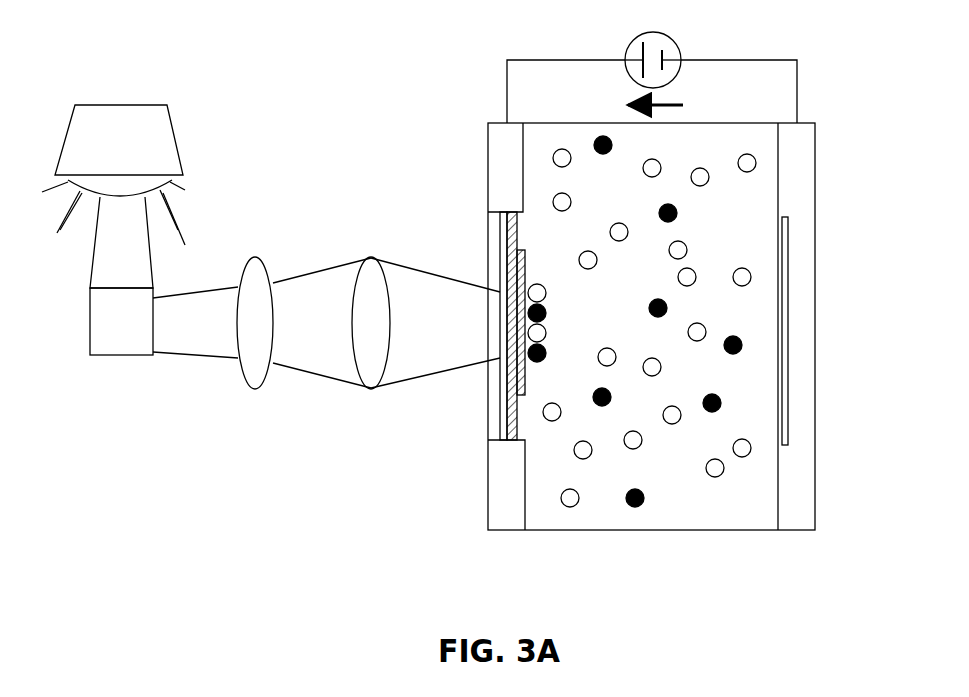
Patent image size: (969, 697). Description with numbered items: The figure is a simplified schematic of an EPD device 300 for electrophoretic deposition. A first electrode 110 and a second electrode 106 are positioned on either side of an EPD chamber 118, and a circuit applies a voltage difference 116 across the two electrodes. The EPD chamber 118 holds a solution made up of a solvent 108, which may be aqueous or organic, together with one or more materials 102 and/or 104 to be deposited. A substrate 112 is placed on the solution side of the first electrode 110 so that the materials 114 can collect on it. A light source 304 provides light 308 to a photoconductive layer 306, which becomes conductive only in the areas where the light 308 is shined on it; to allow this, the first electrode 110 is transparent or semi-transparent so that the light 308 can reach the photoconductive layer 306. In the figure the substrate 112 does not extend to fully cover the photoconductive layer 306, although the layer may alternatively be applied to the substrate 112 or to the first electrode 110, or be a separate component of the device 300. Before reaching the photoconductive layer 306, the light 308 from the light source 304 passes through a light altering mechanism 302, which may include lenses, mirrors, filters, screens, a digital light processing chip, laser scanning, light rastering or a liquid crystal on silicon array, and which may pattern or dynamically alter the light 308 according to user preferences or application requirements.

The EPD device 300 is at (235, 63).
The light altering mechanism 302 is at (260, 223).
The light source 304 is at (101, 149).
The light 308 is at (421, 335).
The first electrode 110 is at (503, 230).
The substrate 112 is at (509, 382).
The photoconductive layer 306 is at (501, 422).
The materials 114 is at (553, 280).
The voltage difference 116 is at (627, 47).
The materials 102 is at (754, 158).
The materials 104 is at (635, 507).
The second electrode 106 is at (783, 242).
The solvent 108 is at (709, 237).
The EPD chamber 118 is at (745, 551).